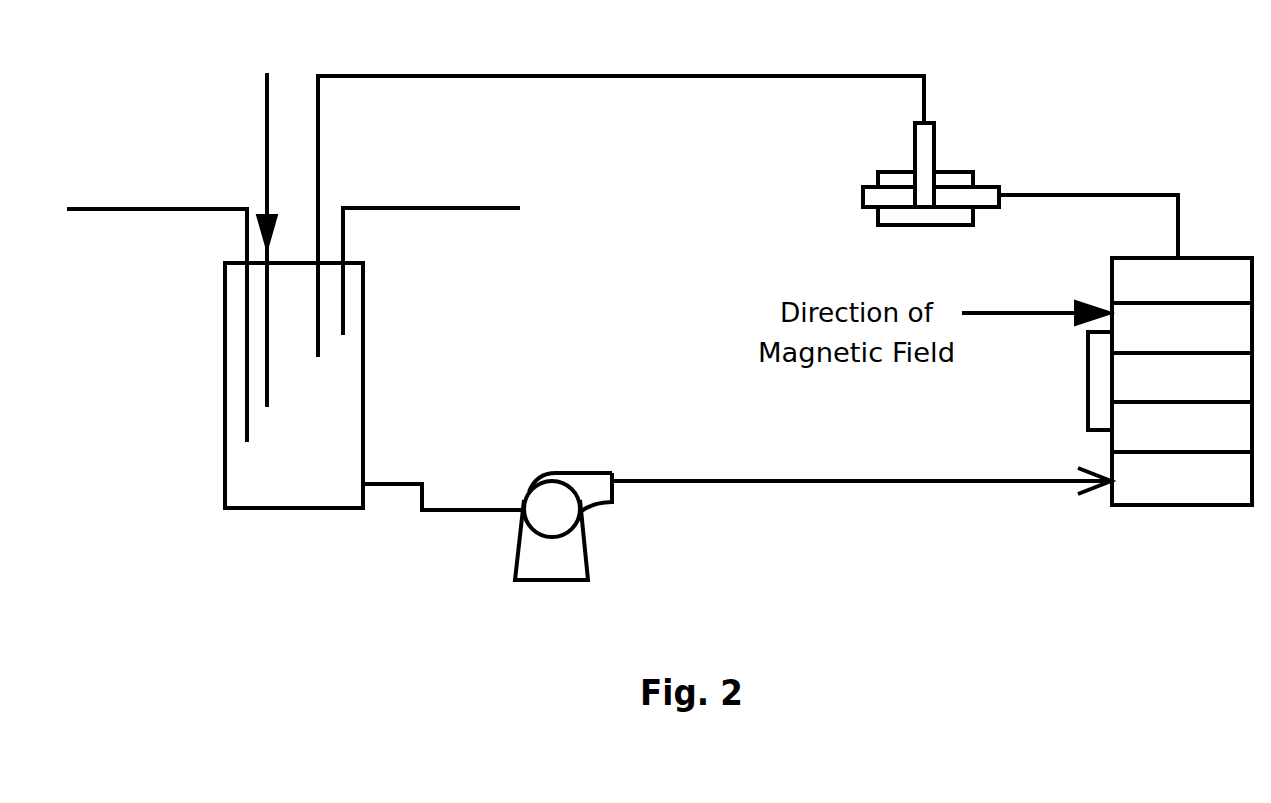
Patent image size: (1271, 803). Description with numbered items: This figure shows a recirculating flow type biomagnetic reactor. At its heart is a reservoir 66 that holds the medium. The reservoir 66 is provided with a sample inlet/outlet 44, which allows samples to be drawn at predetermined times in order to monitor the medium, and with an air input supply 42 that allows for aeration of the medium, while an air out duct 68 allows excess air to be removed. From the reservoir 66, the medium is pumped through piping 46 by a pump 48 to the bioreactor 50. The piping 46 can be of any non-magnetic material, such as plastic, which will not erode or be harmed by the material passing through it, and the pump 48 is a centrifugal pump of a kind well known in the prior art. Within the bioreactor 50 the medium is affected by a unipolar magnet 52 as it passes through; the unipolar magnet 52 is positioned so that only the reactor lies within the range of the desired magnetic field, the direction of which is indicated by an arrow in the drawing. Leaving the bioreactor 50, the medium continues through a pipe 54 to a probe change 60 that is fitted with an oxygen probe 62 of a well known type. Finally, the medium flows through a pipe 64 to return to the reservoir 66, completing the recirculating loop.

The air input supply 42 is at (265, 167).
The sample inlet/outlet 44 is at (167, 212).
The piping 46 is at (458, 512).
The pump 48 is at (563, 526).
The bioreactor 50 is at (1182, 381).
The unipolar magnet 52 is at (1087, 400).
The pipe 54 is at (1115, 193).
The probe change 60 is at (955, 170).
The oxygen probe 62 is at (913, 148).
The pipe 64 is at (408, 75).
The reservoir 66 is at (294, 385).
The air out duct 68 is at (408, 206).